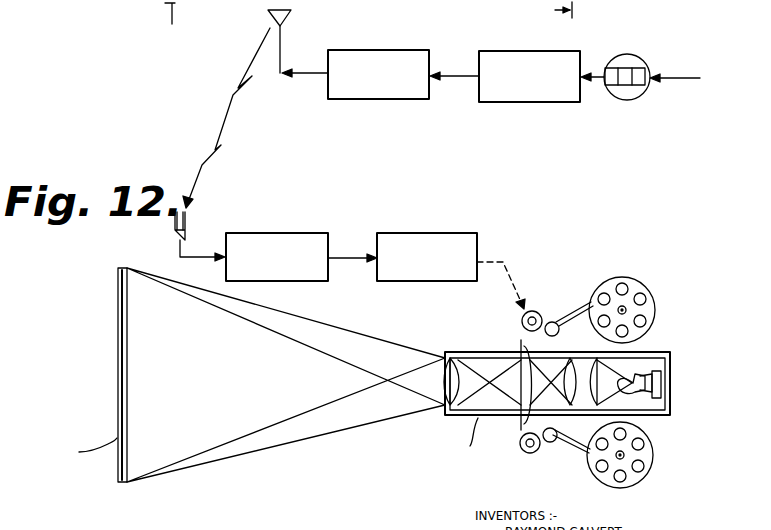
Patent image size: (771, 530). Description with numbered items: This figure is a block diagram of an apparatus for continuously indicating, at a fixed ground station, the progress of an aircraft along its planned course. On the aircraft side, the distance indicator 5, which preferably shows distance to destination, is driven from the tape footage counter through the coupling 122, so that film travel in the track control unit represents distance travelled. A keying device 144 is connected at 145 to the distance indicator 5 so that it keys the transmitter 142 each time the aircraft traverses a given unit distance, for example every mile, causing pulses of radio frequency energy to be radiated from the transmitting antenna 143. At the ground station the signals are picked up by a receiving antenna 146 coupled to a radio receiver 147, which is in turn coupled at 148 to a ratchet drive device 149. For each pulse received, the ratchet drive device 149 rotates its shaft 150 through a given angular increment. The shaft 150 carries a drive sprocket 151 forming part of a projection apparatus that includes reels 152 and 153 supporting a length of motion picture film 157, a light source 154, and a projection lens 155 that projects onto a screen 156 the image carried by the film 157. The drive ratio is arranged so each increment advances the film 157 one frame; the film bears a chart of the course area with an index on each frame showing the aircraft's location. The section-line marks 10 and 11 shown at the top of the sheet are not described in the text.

The distance indicator 5 is at (643, 58).
The section line 10 is at (576, 10).
The section line 11 is at (179, 12).
The coupling 122 is at (689, 78).
The transmitter 142 is at (382, 50).
The transmitting antenna 143 is at (292, 15).
The keying device 144 is at (505, 103).
The connection 145 is at (596, 74).
The receiving antenna 146 is at (190, 216).
The radio receiver 147 is at (274, 233).
The coupling 148 is at (340, 258).
The ratchet drive device 149 is at (430, 233).
The shaft 150 is at (512, 272).
The drive sprocket 151 is at (540, 312).
The reel 152 is at (635, 296).
The reel 153 is at (650, 456).
The light source 154 is at (645, 380).
The projection lens 155 is at (443, 398).
The screen 156 is at (128, 472).
The motion picture film 157 is at (572, 448).